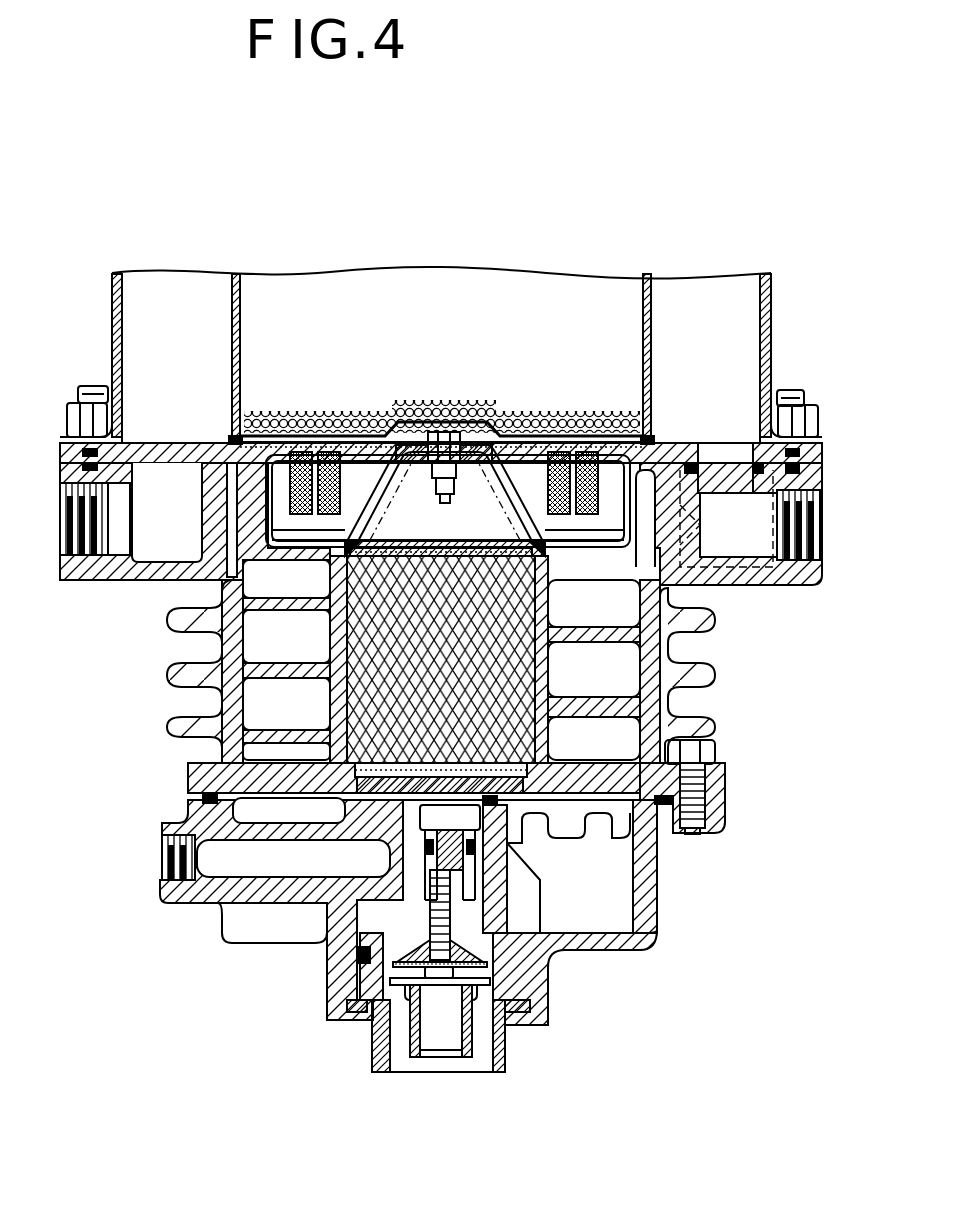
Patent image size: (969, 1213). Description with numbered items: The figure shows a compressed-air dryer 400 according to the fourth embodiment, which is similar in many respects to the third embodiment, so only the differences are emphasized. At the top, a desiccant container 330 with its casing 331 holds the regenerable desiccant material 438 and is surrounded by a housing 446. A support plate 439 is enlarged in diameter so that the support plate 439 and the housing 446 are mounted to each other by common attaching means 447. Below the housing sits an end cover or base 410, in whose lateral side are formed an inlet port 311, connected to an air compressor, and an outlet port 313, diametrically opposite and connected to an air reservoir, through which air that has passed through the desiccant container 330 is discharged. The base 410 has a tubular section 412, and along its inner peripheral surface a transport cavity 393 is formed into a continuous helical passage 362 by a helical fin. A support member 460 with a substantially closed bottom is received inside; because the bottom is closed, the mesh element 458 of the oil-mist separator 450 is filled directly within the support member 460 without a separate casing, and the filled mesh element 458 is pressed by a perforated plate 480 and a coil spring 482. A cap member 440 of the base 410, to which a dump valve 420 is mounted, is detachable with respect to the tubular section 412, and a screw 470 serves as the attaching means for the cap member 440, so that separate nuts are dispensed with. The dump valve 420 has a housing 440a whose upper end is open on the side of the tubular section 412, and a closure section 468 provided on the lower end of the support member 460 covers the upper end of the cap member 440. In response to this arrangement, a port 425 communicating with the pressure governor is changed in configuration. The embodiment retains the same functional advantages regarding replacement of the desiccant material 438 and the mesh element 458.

The compressed-air dryer 400 is at (634, 228).
The desiccant container 330 is at (364, 304).
The housing 446 is at (122, 310).
The casing 331 is at (233, 374).
The desiccant material 438 is at (408, 402).
The perforated plate 480 is at (352, 540).
The coil spring 482 is at (505, 500).
The support plate 439 is at (670, 452).
The common attaching means 447 is at (785, 394).
The inlet port 311 is at (68, 496).
The outlet port 313 is at (825, 555).
The base 410 is at (122, 586).
The mesh element 458 is at (428, 565).
The oil-mist separator 450 is at (456, 565).
The helical passage 362 is at (615, 613).
The transport cavity 393 is at (625, 668).
The tubular section 412 is at (650, 700).
The support member 460 is at (326, 705).
The closure section 468 is at (558, 782).
The port 425 is at (163, 852).
The housing 440a is at (498, 832).
The screw 470 is at (700, 826).
The cap member 440 is at (604, 945).
The dump valve 420 is at (407, 967).